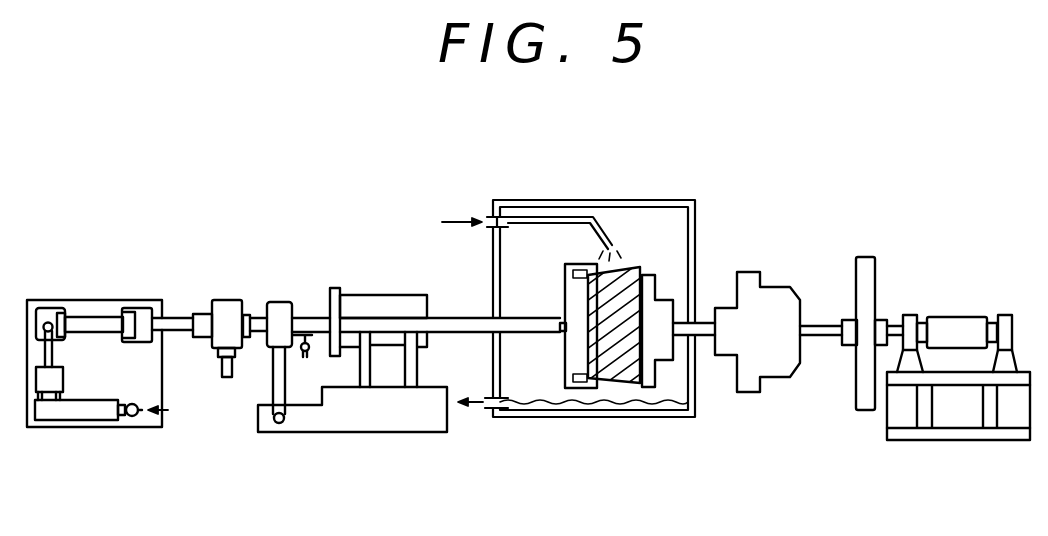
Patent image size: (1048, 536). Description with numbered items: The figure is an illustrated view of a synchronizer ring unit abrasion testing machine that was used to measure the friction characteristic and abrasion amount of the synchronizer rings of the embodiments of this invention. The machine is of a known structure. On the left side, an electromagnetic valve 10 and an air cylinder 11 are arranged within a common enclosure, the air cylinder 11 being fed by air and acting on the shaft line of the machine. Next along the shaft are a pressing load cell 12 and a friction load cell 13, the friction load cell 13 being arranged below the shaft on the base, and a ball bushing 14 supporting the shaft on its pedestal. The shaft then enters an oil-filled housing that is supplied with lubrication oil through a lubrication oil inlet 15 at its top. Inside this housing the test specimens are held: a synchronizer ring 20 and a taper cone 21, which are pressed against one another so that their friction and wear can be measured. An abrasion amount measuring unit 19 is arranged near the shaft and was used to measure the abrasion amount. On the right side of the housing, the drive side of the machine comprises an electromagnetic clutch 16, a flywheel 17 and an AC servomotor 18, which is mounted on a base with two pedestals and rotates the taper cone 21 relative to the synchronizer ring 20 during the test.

The electromagnetic valve 10 is at (64, 377).
The air cylinder 11 is at (100, 317).
The pressing load cell 12 is at (228, 310).
The friction load cell 13 is at (277, 432).
The ball bushing 14 is at (363, 317).
The lubrication oil inlet 15 is at (486, 216).
The electromagnetic clutch 16 is at (778, 300).
The flywheel 17 is at (877, 278).
The AC servomotor 18 is at (962, 325).
The abrasion amount measuring unit 19 is at (309, 332).
The synchronizer ring 20 is at (600, 273).
The taper cone 21 is at (630, 378).